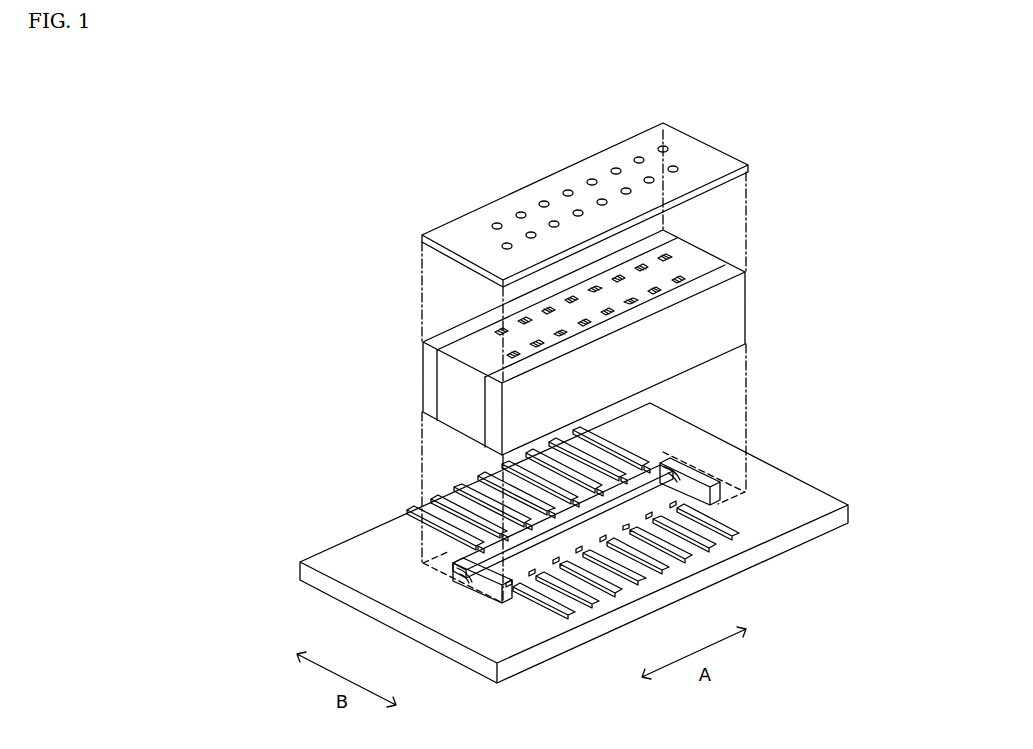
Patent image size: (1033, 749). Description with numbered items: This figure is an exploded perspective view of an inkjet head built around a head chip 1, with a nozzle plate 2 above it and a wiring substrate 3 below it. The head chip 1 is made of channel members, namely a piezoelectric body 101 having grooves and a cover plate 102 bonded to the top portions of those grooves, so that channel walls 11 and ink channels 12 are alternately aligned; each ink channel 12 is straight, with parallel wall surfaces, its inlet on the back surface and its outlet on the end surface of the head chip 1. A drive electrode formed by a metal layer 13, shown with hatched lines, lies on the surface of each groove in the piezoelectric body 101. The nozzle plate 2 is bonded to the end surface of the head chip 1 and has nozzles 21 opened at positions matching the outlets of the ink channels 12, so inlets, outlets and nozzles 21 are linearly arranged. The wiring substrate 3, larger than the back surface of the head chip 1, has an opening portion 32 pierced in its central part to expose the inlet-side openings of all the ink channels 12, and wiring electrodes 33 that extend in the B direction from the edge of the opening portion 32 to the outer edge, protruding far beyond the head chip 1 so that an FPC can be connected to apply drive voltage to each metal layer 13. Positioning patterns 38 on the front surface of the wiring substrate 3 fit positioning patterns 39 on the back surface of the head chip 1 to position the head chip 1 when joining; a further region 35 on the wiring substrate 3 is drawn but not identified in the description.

The head chip 1 is at (747, 307).
The nozzle plate 2 is at (717, 151).
The wiring substrate 3 is at (770, 464).
The channel wall 11 is at (642, 270).
The ink channel 12 is at (668, 260).
The metal layer 13 is at (491, 330).
The nozzle 21 is at (675, 166).
The opening portion 32 is at (667, 468).
The wiring electrode 33 is at (413, 510).
The mounting region 35 is at (731, 498).
The positioning pattern 38 is at (694, 473).
The positioning pattern 39 is at (672, 470).
The piezoelectric body 101 is at (712, 262).
The cover plate 102 is at (712, 272).